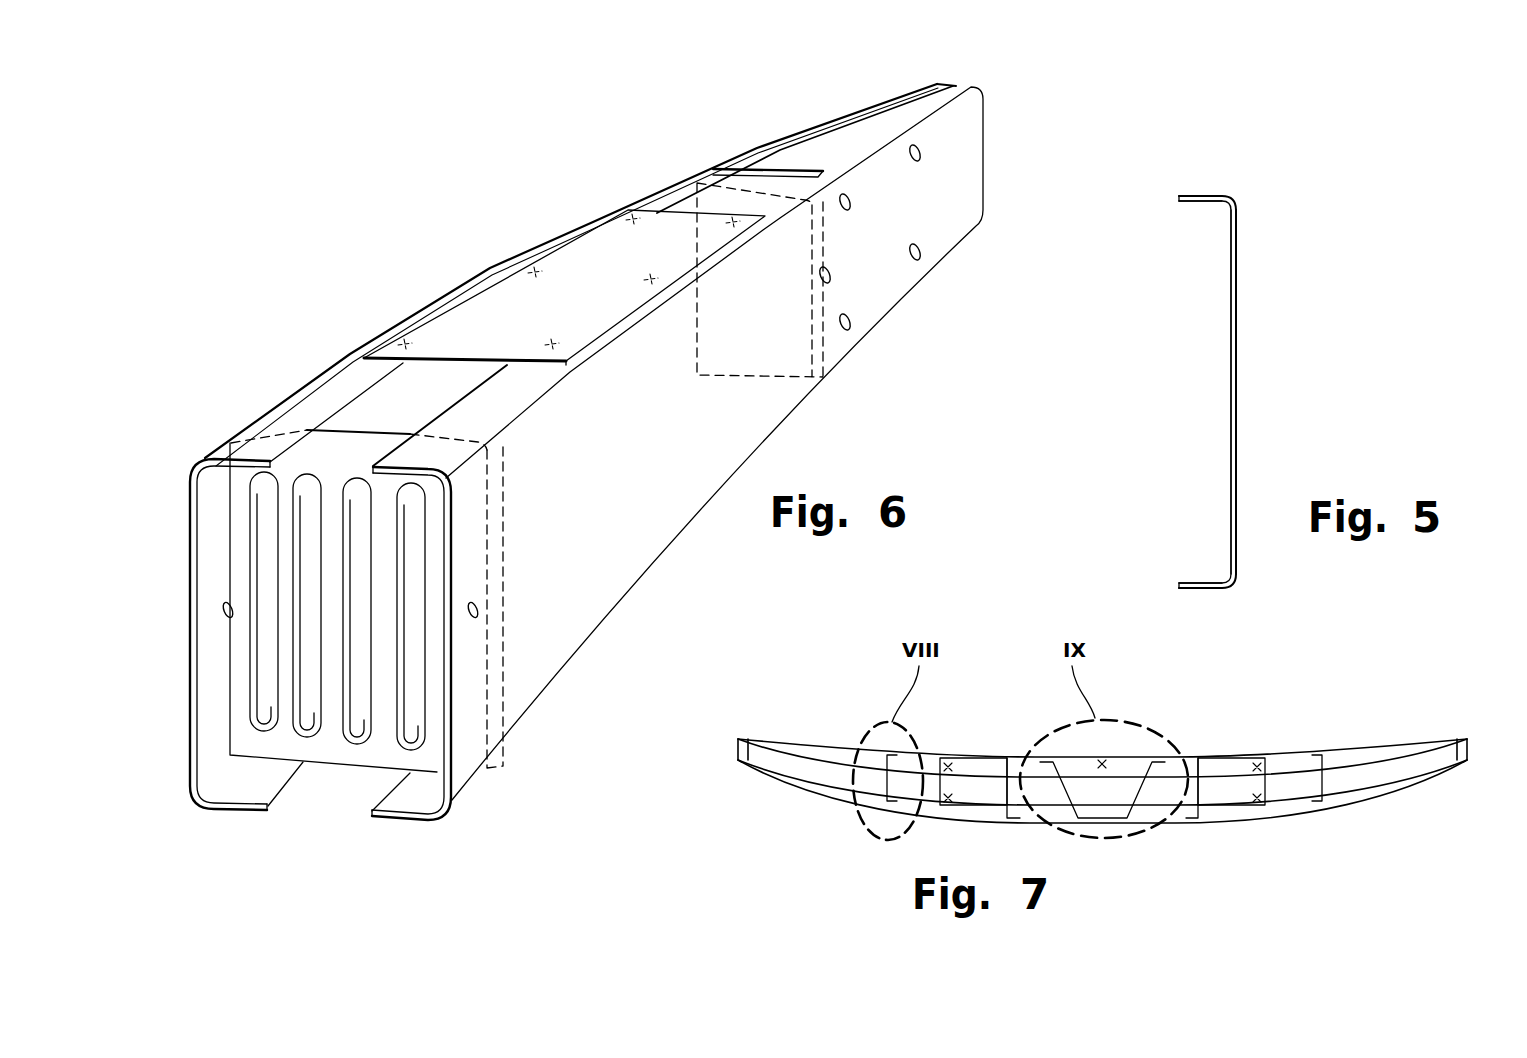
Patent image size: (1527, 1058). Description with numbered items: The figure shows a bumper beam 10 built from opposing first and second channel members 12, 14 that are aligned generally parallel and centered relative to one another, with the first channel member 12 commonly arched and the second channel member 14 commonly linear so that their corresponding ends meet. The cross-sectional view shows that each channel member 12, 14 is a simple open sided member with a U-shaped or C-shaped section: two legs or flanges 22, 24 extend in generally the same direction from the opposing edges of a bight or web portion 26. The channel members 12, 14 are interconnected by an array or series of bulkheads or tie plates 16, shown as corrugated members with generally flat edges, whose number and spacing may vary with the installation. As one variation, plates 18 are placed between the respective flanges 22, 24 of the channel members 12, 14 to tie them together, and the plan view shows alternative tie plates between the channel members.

In FIG. 6, the bumper beam 10 is at (430, 252).
In FIG. 6, the first channel member 12 is at (256, 781).
In FIG. 5, the first channel member 12 is at (1170, 338).
In FIG. 6, the second channel member 14 is at (417, 800).
In FIG. 6, the bulkhead or tie plate 16 is at (342, 753).
In FIG. 6, the plate 18 is at (588, 280).
In FIG. 5, the flange 22 is at (1185, 195).
In FIG. 5, the flange 24 is at (1195, 586).
In FIG. 5, the web portion 26 is at (1237, 394).